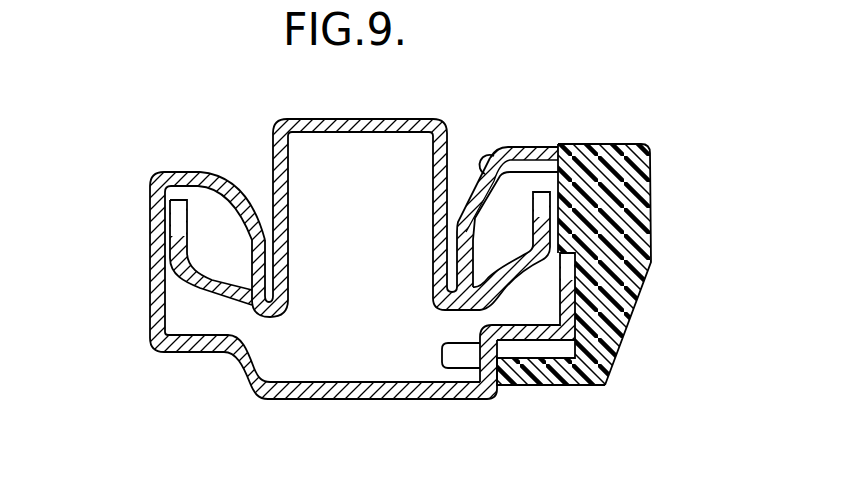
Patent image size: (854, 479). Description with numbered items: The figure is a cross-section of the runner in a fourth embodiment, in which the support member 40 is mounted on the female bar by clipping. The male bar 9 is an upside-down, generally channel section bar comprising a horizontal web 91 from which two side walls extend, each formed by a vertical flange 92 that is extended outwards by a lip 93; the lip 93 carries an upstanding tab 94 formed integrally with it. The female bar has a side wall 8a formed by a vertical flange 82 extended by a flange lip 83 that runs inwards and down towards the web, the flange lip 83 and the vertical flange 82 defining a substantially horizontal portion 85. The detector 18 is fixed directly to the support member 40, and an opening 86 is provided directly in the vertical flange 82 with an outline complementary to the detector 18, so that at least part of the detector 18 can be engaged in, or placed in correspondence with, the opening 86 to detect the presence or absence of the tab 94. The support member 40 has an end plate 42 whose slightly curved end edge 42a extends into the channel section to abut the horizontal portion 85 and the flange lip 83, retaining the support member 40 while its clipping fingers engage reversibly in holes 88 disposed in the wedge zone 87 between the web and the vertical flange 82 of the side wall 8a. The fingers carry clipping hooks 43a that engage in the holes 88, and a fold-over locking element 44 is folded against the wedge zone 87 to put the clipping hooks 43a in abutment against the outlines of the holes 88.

The male bar 9 is at (268, 117).
The horizontal web 91 is at (329, 114).
The vertical flange 92 is at (432, 218).
The side wall 8a is at (148, 218).
The vertical flange 82 is at (150, 276).
The flange lip 83 is at (234, 181).
The horizontal portion 85 is at (183, 172).
The wedge zone 87 is at (203, 352).
The holes 88 is at (473, 345).
The lip 93 is at (218, 290).
The upstanding tab 94 is at (540, 207).
The end plate 42 is at (547, 146).
The end edge 42a is at (490, 155).
The clipping hooks 43a is at (448, 355).
The fold-over locking element 44 is at (548, 346).
The support member 40 is at (660, 187).
The opening 86 is at (578, 146).
The detector 18 is at (592, 233).